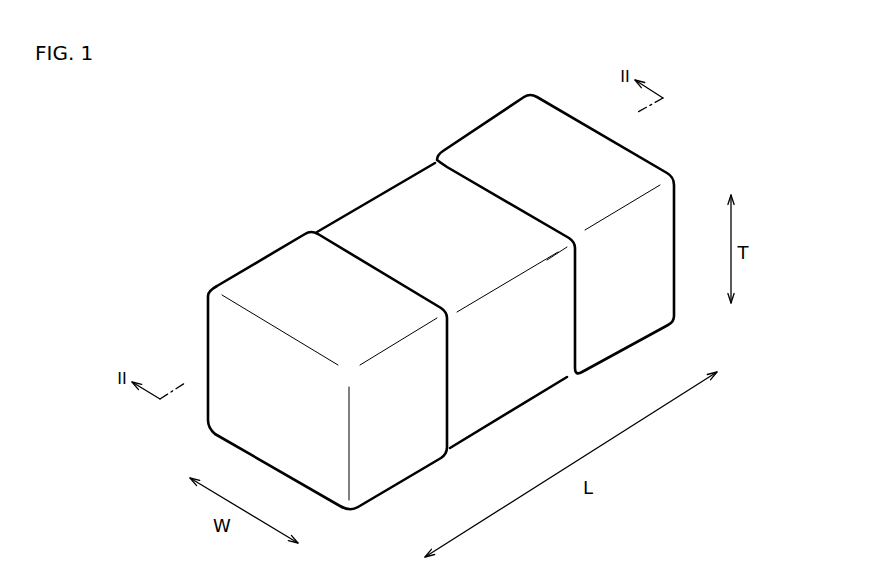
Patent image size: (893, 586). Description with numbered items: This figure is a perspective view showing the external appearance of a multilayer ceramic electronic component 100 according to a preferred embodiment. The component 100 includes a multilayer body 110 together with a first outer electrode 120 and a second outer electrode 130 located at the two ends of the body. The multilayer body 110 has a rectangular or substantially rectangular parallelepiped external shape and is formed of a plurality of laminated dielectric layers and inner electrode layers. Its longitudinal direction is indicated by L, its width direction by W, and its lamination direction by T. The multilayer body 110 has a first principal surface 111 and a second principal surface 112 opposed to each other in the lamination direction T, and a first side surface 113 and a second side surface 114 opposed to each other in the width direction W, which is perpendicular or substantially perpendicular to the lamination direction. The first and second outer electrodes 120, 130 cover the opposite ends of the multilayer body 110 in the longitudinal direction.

The multilayer ceramic electronic component 100 is at (670, 132).
The multilayer body 110 is at (343, 217).
The first principal surface 111 is at (428, 205).
The second principal surface 112 is at (483, 430).
The first side surface 113 is at (542, 355).
The second side surface 114 is at (375, 197).
The first outer electrode 120 is at (262, 255).
The second outer electrode 130 is at (490, 118).